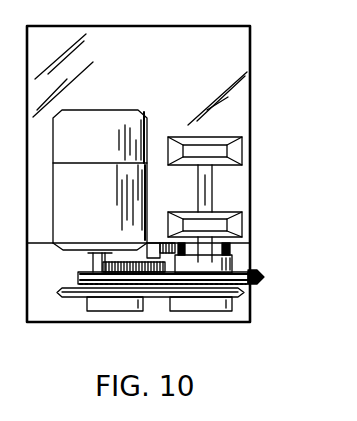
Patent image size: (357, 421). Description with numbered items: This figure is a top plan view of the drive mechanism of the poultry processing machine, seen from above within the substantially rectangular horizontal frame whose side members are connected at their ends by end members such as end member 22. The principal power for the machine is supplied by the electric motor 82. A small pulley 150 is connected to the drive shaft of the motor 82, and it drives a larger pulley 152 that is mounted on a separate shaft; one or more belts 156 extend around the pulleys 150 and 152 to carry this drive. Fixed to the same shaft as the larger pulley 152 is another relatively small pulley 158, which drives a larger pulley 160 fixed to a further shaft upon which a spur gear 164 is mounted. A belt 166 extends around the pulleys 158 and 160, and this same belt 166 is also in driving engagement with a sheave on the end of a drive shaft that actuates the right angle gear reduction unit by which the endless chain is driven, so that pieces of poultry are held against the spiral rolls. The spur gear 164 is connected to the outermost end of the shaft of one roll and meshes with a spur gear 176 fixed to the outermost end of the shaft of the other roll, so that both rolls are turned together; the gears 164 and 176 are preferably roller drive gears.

The end member 22 is at (250, 138).
The electric motor 82 is at (88, 208).
The small pulley 150 is at (80, 276).
The larger pulley 152 is at (250, 273).
The belt 156 is at (265, 277).
The small pulley 158 is at (232, 302).
The larger pulley 160 is at (77, 298).
The spur gear 164 is at (92, 262).
The belt 166 is at (153, 299).
The spur gear 176 is at (161, 245).